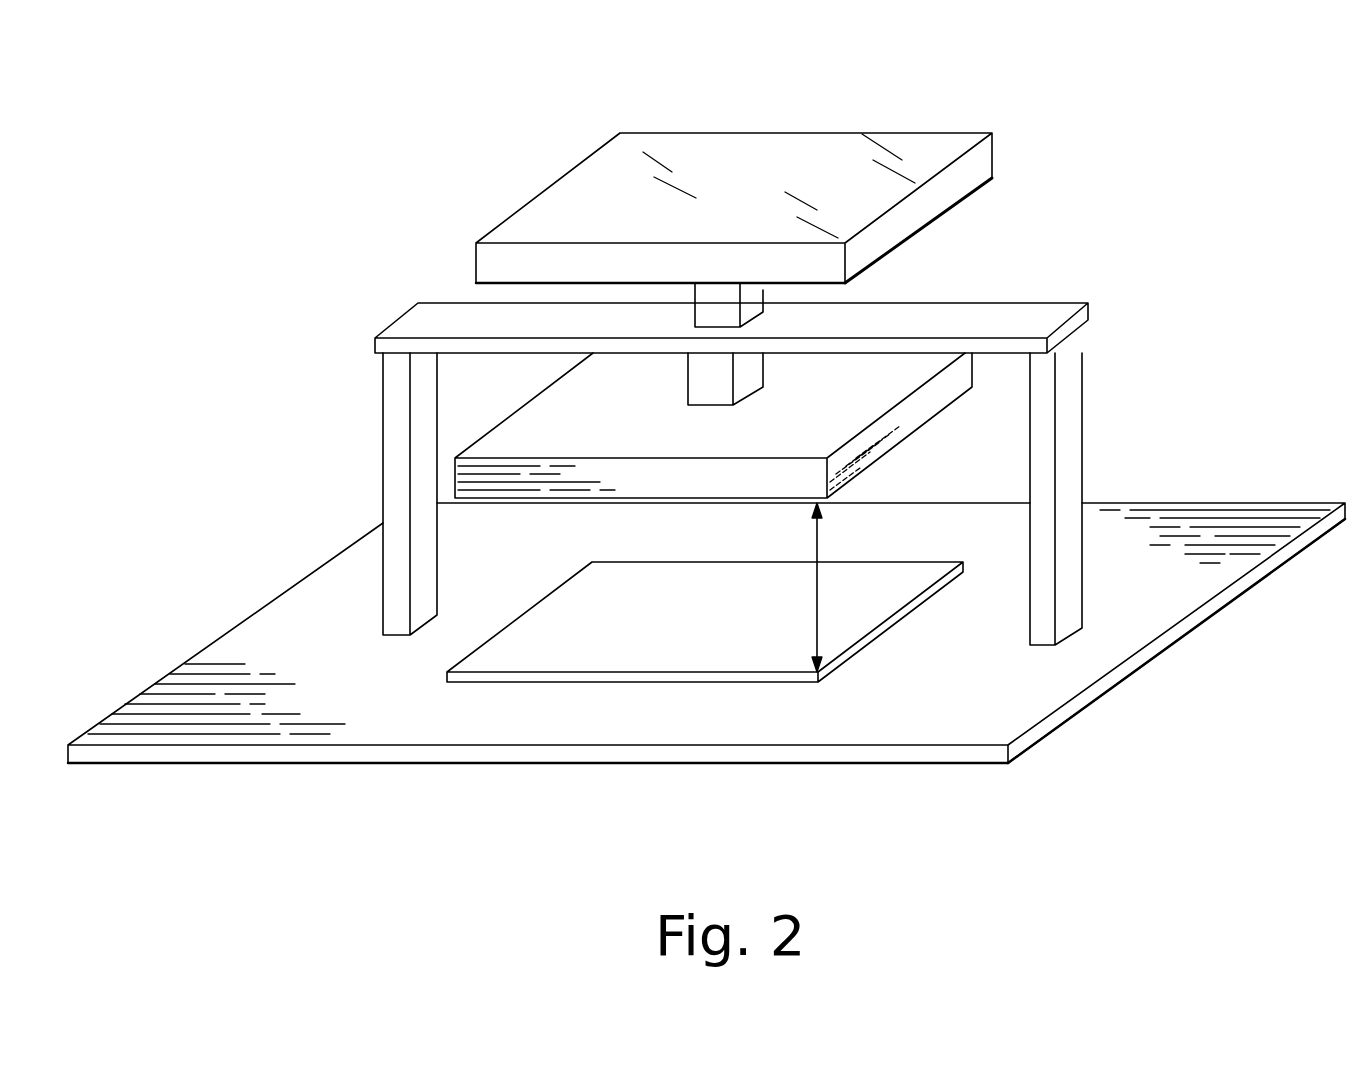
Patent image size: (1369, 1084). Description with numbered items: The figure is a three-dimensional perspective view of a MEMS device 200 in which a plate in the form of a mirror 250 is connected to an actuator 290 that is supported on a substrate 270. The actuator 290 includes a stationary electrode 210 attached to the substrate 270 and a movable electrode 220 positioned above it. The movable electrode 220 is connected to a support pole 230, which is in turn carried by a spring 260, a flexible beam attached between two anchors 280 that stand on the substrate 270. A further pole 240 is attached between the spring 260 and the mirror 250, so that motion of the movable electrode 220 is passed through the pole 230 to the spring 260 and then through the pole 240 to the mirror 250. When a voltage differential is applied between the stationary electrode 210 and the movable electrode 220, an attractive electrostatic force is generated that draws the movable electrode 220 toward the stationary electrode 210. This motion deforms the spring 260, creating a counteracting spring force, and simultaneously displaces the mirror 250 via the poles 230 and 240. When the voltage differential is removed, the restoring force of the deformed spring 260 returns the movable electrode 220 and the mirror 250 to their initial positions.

The MEMS device 200 is at (241, 78).
The stationary electrode 210 is at (860, 642).
The movable electrode 220 is at (893, 425).
The support pole 230 is at (745, 372).
The pole 240 is at (757, 295).
The mirror 250 is at (975, 167).
The spring 260 is at (973, 323).
The substrate 270 is at (1068, 710).
The anchors 280 is at (393, 423).
The actuator 290 is at (275, 550).